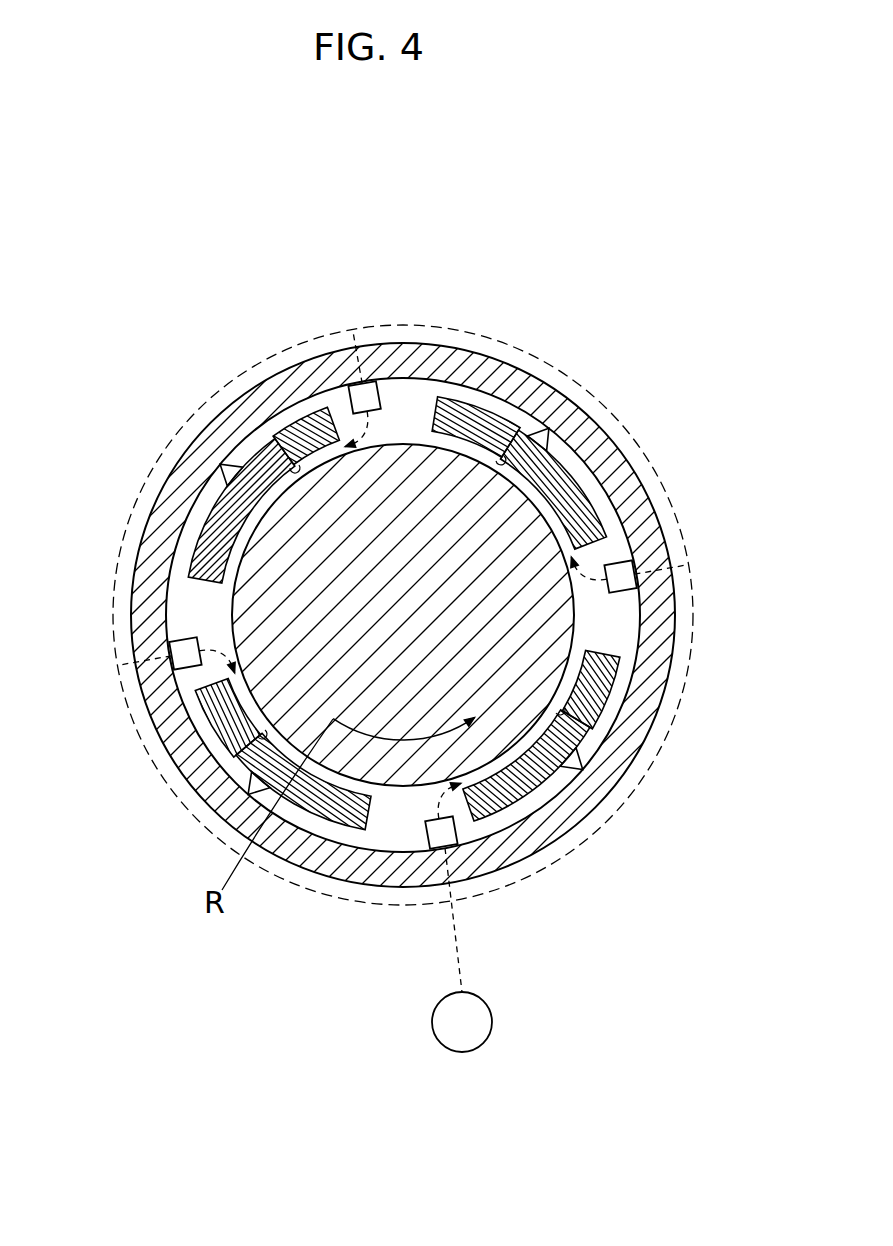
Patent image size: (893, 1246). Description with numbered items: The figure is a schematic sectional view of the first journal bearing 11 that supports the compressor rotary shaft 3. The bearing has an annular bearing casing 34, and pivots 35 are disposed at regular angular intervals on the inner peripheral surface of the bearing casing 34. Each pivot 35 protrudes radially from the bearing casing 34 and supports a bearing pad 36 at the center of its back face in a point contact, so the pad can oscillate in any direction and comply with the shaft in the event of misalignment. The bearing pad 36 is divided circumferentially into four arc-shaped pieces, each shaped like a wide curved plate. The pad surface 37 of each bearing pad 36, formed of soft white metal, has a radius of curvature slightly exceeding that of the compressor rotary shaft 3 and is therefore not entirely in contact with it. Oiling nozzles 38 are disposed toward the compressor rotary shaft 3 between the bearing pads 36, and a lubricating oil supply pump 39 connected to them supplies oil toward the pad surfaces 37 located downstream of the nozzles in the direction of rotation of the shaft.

The compressor rotary shaft 3 is at (525, 513).
The first journal bearing 11 is at (614, 334).
The bearing casing 34 is at (592, 428).
The pivot 35 is at (396, 588).
The bearing pad 36 is at (313, 418).
The pad surface 37 is at (272, 443).
The oiling nozzle 38 is at (350, 398).
The lubricating oil supply pump 39 is at (492, 1012).